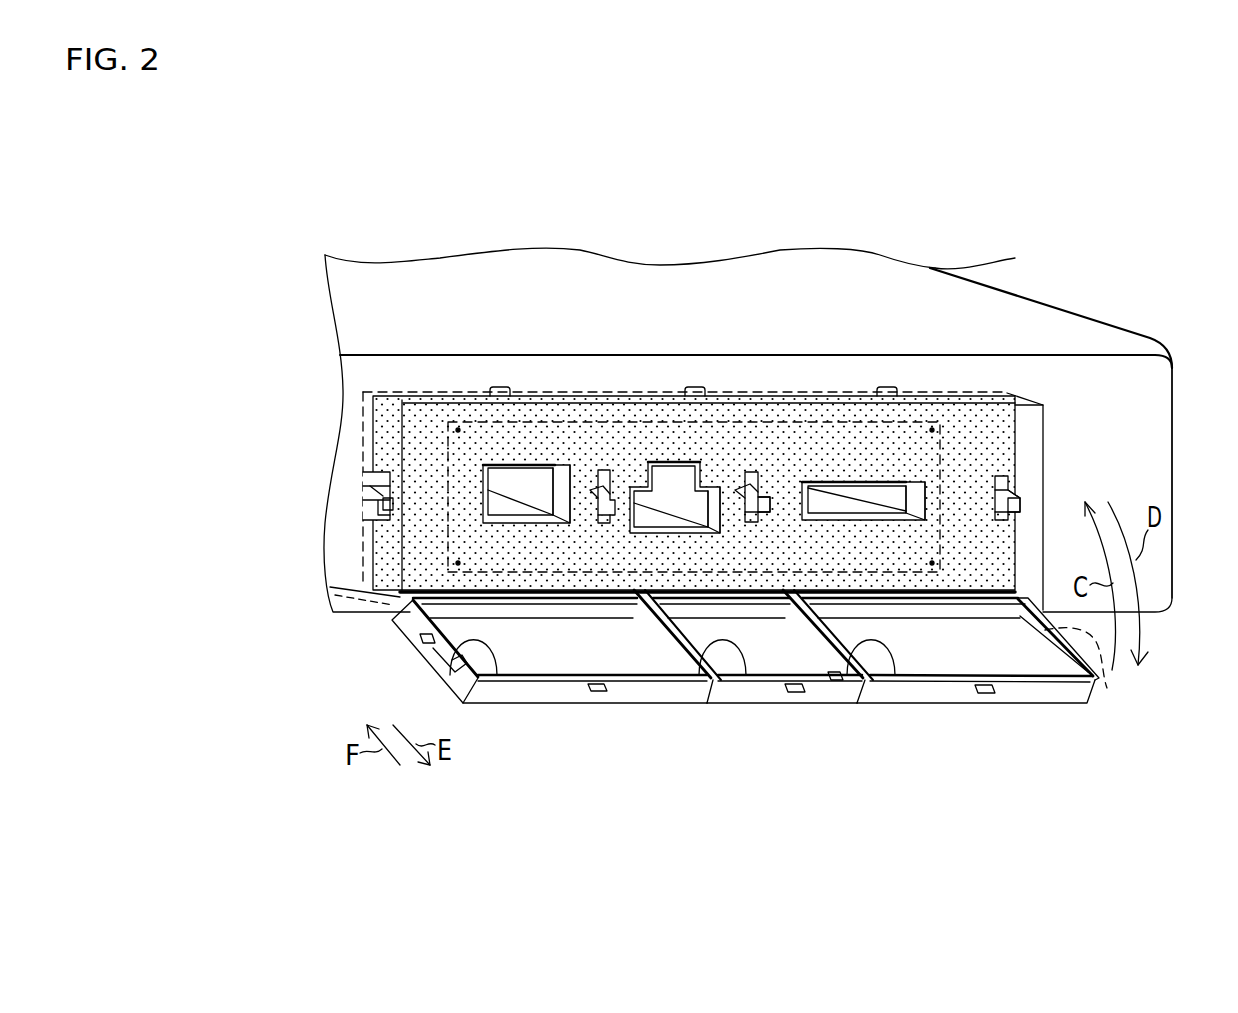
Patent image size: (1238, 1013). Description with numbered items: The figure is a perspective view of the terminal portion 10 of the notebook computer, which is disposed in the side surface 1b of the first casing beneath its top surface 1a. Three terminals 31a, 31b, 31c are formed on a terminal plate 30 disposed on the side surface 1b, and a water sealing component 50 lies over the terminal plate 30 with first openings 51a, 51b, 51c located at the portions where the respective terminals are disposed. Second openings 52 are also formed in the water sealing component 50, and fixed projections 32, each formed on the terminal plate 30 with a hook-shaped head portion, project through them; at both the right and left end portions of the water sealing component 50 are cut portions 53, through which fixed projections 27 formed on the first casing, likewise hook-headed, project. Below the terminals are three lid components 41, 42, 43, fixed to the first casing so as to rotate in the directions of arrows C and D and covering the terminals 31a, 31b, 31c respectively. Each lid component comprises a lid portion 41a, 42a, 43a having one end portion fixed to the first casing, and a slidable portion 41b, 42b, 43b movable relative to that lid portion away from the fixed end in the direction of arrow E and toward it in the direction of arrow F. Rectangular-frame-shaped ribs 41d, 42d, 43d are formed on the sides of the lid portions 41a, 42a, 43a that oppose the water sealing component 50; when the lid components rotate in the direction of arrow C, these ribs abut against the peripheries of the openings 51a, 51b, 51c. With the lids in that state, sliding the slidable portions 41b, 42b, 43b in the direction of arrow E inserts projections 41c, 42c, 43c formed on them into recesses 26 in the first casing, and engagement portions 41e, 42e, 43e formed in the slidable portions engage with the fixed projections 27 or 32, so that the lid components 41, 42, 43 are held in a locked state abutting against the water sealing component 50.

The terminal portion 10 is at (1047, 428).
The top surface 1a is at (1037, 318).
The side surface 1b is at (1138, 382).
The recess 26 is at (497, 390).
The fixed projection 27 is at (1020, 507).
The terminal plate 30 is at (627, 395).
The terminal 31a is at (522, 482).
The terminal 31b is at (667, 493).
The terminal 31c is at (842, 498).
The fixed projection 32 is at (752, 472).
The lid component 41 is at (541, 699).
The lid portion 41a is at (570, 640).
The slidable portion 41b is at (640, 695).
The projection 41c is at (603, 690).
The rib 41d is at (487, 680).
The engagement portion 41e is at (423, 643).
The lid component 42 is at (752, 695).
The lid portion 42a is at (758, 640).
The slidable portion 42b is at (818, 692).
The projection 42c is at (790, 692).
The rib 42d is at (712, 700).
The engagement portion 42e is at (838, 688).
The lid component 43 is at (975, 691).
The lid portion 43a is at (967, 652).
The slidable portion 43b is at (1020, 693).
The projection 43c is at (980, 692).
The rib 43d is at (870, 690).
The engagement portion 43e is at (1107, 688).
The water sealing component 50 is at (423, 453).
The first opening 51a is at (567, 482).
The first opening 51b is at (717, 498).
The first opening 51c is at (920, 488).
The second opening 52 is at (765, 476).
The cut portion 53 is at (1020, 480).